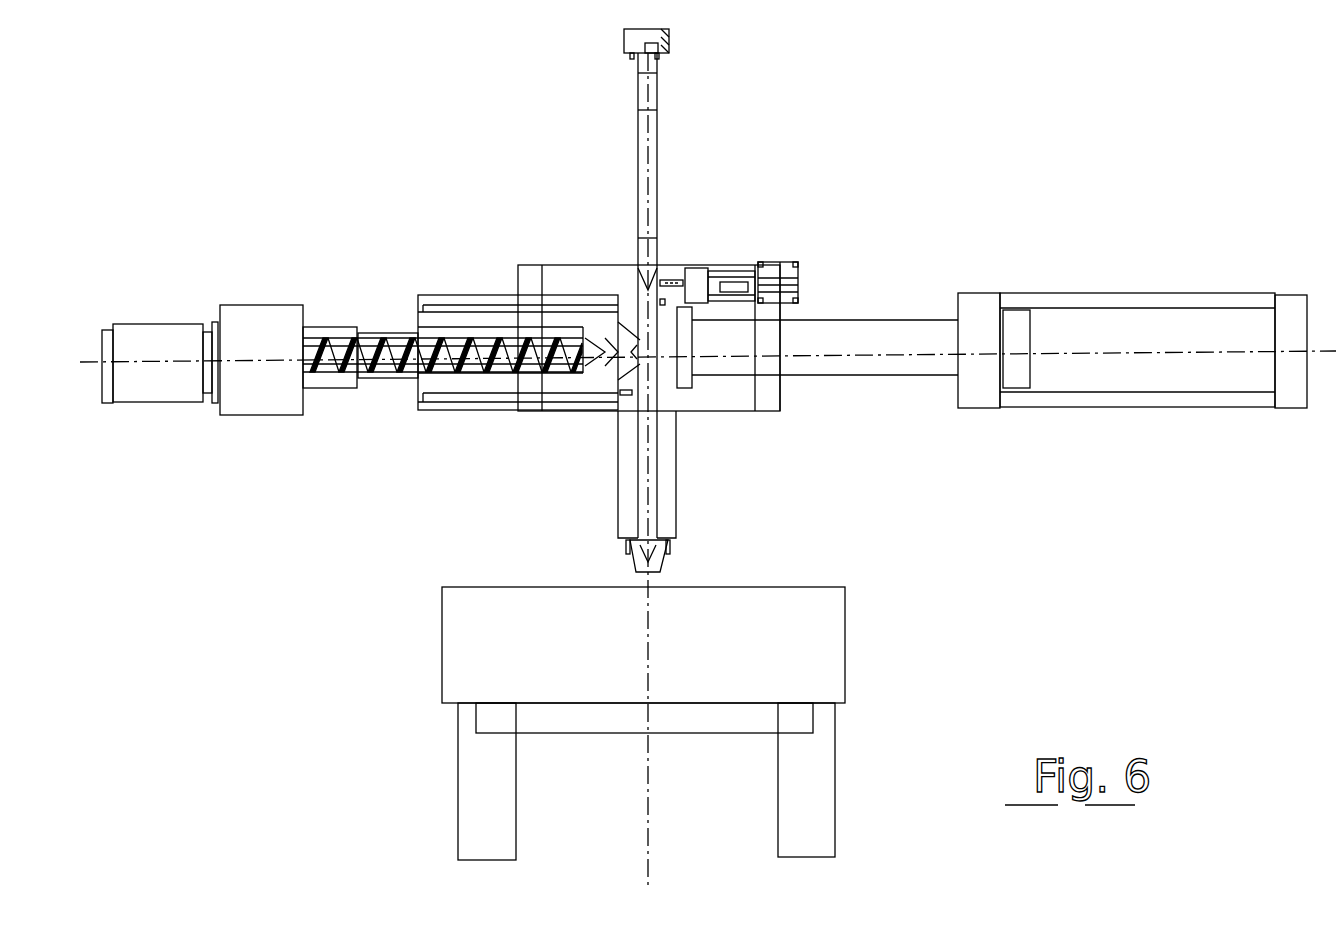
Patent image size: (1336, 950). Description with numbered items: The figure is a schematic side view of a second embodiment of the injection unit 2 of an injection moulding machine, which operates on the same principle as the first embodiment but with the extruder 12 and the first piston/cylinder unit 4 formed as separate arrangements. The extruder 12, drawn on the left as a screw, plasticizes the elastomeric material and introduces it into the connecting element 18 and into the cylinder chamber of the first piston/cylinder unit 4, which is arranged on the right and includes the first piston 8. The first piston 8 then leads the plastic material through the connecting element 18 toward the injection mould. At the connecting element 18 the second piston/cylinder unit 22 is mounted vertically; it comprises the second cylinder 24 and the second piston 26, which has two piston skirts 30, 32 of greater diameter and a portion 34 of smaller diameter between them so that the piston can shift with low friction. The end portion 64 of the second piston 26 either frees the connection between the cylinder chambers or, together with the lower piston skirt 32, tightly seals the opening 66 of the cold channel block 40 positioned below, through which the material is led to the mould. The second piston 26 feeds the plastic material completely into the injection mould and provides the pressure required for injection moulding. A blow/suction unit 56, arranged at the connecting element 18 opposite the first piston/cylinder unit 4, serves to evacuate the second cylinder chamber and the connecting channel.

The injection unit 2 is at (862, 484).
The first piston/cylinder unit 4 is at (985, 393).
The first piston 8 is at (890, 330).
The extruder 12 is at (380, 360).
The connecting element 18 is at (568, 282).
The second piston/cylinder unit 22 is at (617, 438).
The second cylinder 24 is at (668, 461).
The second piston 26 is at (655, 70).
The piston skirt 30 is at (652, 95).
The piston skirt 32 is at (650, 245).
The portion of smaller diameter 34 is at (652, 165).
The cold channel block 40 is at (832, 650).
The blow/suction unit 56 is at (784, 268).
The end portion 64 is at (660, 275).
The opening 66 is at (668, 548).